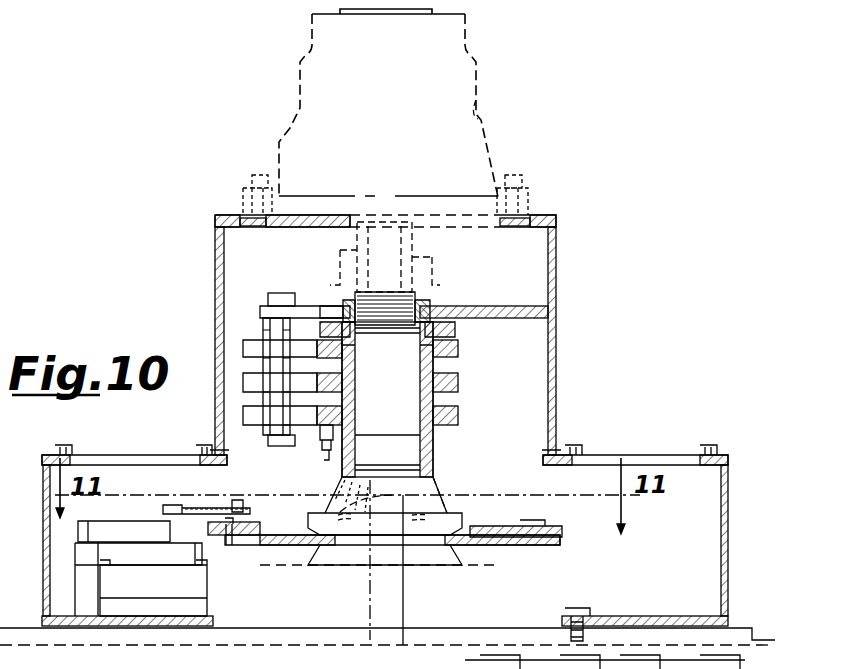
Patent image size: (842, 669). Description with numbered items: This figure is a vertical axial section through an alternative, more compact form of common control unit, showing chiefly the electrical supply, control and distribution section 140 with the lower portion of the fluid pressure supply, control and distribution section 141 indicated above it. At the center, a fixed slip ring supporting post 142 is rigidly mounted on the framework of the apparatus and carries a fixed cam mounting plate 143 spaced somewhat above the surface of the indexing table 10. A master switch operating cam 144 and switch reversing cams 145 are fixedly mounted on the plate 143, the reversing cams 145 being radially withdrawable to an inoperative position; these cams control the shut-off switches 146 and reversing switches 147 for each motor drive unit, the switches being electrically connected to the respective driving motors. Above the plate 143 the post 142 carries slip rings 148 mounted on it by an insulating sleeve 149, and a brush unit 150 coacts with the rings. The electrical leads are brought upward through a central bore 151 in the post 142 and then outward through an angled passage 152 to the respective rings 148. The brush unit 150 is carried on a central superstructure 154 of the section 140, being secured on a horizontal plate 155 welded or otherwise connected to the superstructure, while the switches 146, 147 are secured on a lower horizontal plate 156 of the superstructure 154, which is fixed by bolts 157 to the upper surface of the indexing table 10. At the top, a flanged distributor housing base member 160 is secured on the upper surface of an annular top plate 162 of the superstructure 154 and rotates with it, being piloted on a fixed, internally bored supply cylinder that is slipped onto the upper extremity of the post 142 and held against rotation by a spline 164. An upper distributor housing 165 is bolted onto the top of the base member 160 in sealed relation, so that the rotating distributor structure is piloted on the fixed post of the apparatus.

The indexing table 10 is at (737, 640).
The electrical supply, control and distribution section 140 is at (558, 300).
The fluid pressure supply, control and distribution section 141 is at (483, 76).
The slip ring supporting post 142 is at (415, 428).
The cam mounting plate 143 is at (466, 534).
The master switch operating cam 144 is at (210, 506).
The switch reversing cams 145 is at (236, 538).
The shut-off switches 146 is at (78, 530).
The reversing switches 147 is at (100, 548).
The slip rings 148 is at (458, 350).
The insulating sleeve 149 is at (458, 396).
The brush unit 150 is at (260, 345).
The central bore 151 is at (432, 517).
The angled passage 152 is at (340, 520).
The central superstructure 154 is at (557, 403).
The horizontal plate 155 is at (485, 316).
The lower horizontal plate 156 is at (155, 626).
The bolts 157 is at (590, 616).
The distributor housing base member 160 is at (303, 225).
The annular top plate 162 is at (556, 220).
The spline 164 is at (357, 258).
The upper distributor housing 165 is at (480, 118).